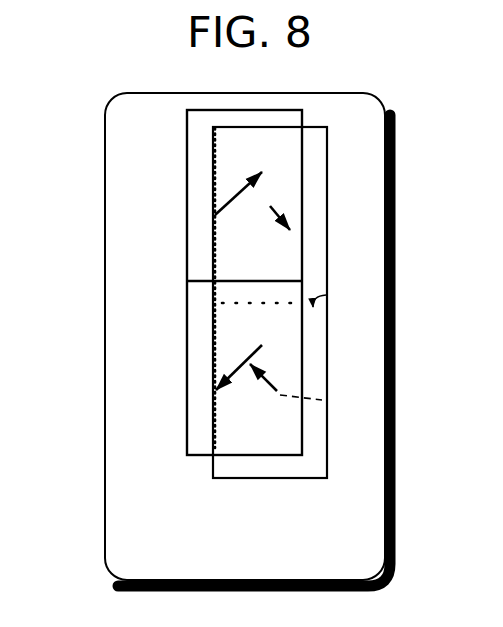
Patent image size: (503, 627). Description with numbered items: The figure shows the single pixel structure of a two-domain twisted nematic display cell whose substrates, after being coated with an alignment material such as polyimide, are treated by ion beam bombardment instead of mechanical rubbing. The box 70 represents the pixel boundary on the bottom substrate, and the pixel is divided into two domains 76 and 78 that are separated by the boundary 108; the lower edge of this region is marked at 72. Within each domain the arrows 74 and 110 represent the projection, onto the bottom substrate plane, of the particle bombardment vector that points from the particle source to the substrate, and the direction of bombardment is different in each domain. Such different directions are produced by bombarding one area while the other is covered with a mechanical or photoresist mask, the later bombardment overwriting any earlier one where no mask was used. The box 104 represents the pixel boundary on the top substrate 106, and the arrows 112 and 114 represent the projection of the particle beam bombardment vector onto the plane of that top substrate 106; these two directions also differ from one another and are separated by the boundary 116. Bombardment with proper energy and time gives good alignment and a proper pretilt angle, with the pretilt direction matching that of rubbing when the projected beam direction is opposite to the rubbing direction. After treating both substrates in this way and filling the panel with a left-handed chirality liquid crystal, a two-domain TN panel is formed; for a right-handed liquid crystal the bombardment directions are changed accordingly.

The pixel boundary on the bottom substrate 70 is at (368, 94).
The lower edge of display window 72 is at (330, 458).
The particle bombardment vector projection 74 is at (262, 197).
The first domain 76 is at (320, 253).
The second domain 78 is at (320, 362).
The pixel boundary on the top substrate 104 is at (187, 318).
The top substrate 106 is at (203, 143).
The domain boundary 108 is at (328, 292).
The particle bombardment vector projection 110 is at (322, 400).
The particle beam bombardment vector projection 112 is at (228, 203).
The particle beam bombardment vector projection 114 is at (232, 368).
The domain boundary on the top substrate 116 is at (235, 281).